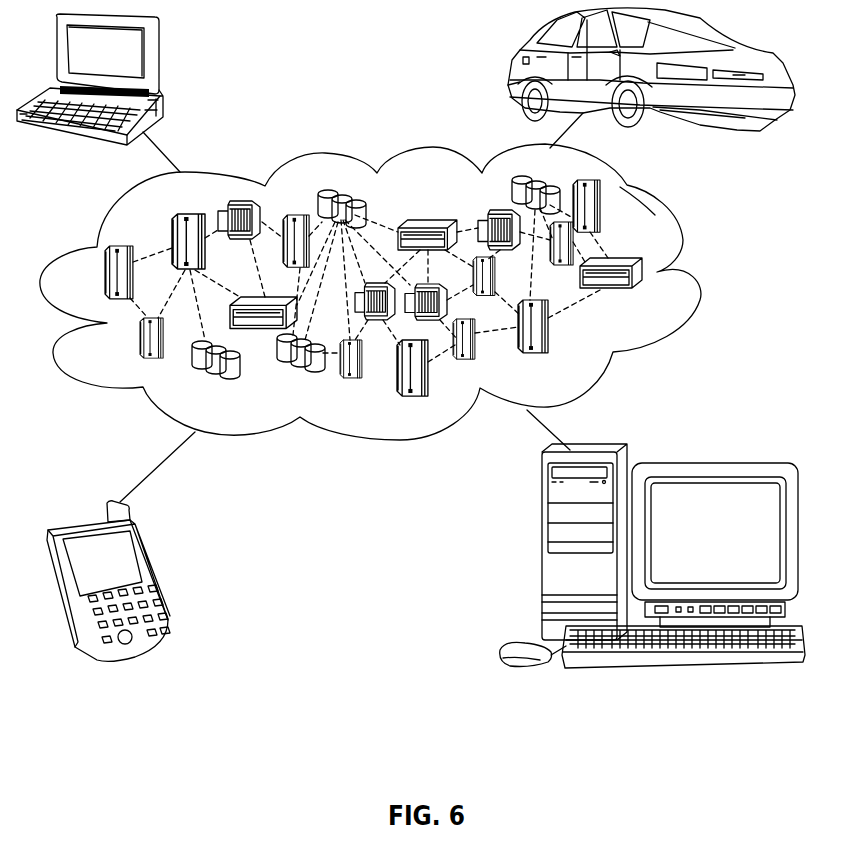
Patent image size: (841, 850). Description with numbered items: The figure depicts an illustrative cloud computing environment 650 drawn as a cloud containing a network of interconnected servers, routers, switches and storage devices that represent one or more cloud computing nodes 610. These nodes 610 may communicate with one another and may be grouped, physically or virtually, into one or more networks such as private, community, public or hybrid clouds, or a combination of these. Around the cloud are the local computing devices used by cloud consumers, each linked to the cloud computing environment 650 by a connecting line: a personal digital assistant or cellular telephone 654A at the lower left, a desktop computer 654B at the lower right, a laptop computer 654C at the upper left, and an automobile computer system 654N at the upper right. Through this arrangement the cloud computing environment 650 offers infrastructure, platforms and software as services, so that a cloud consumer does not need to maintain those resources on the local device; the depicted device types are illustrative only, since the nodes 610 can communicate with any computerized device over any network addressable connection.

The laptop computer 654C is at (158, 58).
The automobile computer system 654N is at (518, 62).
The cloud computing environment 650 is at (687, 237).
The cloud computing nodes 610 is at (668, 293).
The personal digital assistant (PDA) or cellular telephone 654A is at (153, 573).
The desktop computer 654B is at (542, 553).